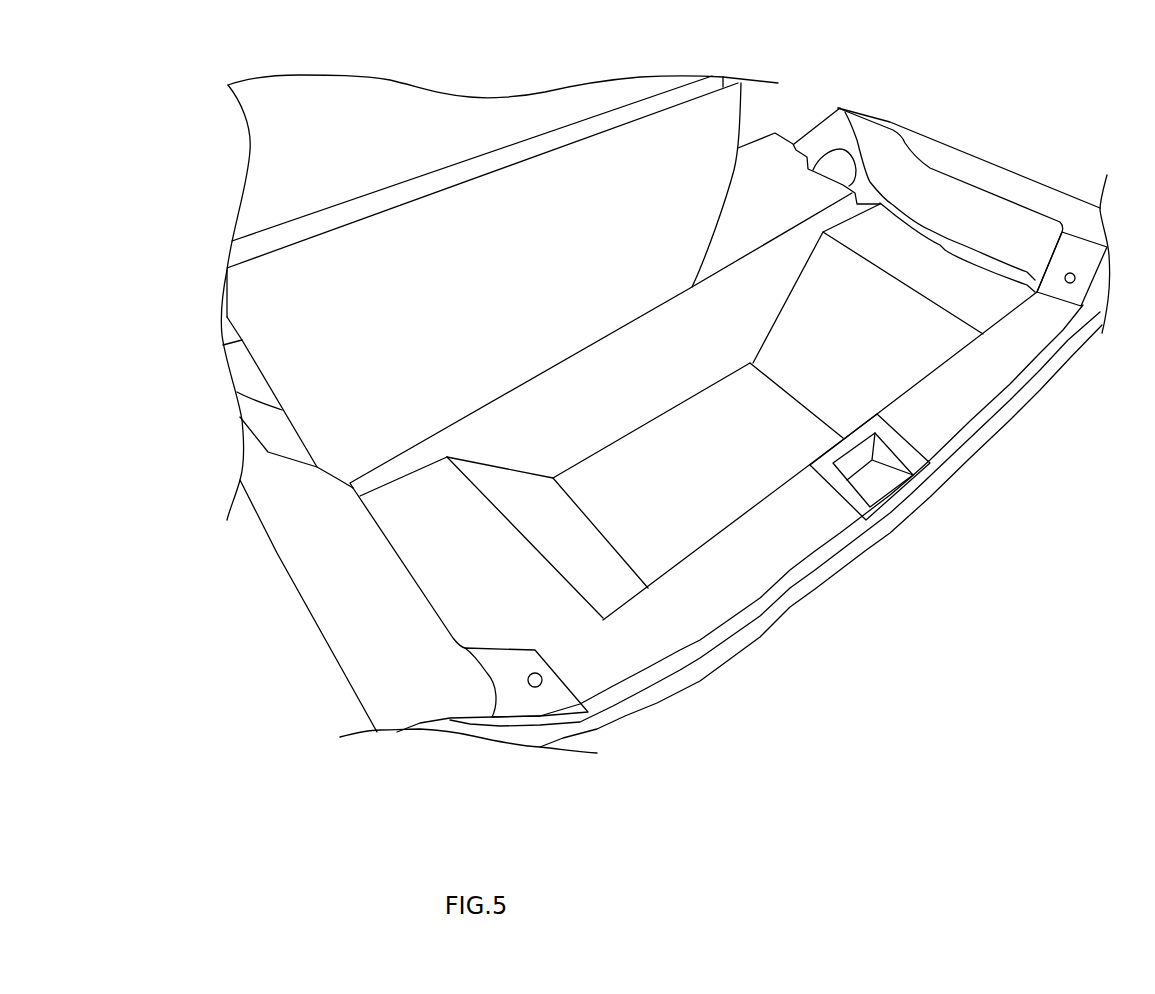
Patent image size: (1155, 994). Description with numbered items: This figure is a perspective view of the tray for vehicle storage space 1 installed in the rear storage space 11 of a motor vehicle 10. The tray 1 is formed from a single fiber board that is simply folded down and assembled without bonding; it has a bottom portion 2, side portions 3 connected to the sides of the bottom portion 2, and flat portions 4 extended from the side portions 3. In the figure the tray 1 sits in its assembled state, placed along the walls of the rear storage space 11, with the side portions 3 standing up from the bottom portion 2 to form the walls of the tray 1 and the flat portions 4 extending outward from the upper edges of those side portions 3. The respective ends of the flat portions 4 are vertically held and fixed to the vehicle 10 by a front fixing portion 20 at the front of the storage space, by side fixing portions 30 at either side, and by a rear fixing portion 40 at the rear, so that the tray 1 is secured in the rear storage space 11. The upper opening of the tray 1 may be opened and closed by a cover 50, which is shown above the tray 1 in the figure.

The tray for vehicle storage space 1 is at (853, 388).
The bottom portion 2 is at (695, 492).
The side portions 3 is at (603, 587).
The flat portions 4 is at (547, 625).
The motor vehicle 10 is at (912, 124).
The rear storage space 11 is at (427, 613).
The front fixing portion 20 is at (777, 160).
The side fixing portions 30 is at (310, 544).
The rear fixing portion 40 is at (805, 530).
The cover 50 is at (609, 158).